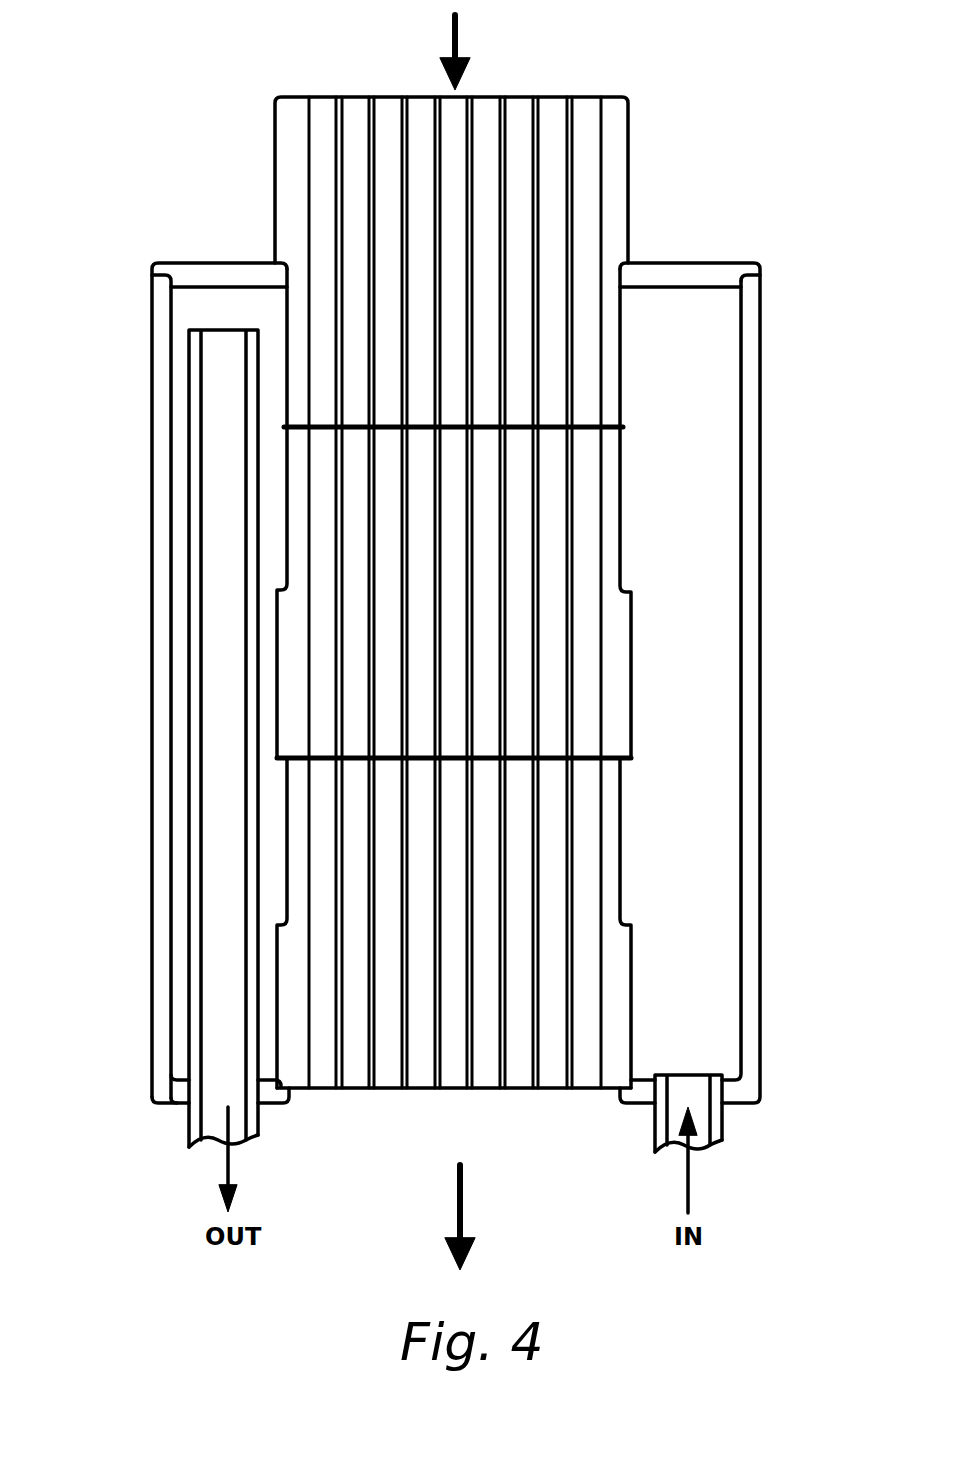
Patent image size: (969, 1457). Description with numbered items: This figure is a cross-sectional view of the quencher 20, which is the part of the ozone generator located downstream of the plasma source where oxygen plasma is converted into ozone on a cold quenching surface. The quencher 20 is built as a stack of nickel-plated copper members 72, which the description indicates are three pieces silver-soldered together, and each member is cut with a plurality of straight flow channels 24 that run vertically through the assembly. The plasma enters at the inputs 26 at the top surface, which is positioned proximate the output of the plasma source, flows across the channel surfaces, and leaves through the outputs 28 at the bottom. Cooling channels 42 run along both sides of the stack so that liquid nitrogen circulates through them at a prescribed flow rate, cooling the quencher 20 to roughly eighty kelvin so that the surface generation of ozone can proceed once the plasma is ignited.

The quencher 20 is at (152, 620).
The flow channels 24 is at (327, 1073).
The inputs 26 is at (452, 52).
The outputs 28 is at (457, 1226).
The cooling channels 42 is at (723, 1032).
The heat exchanger sections 72 is at (630, 200).